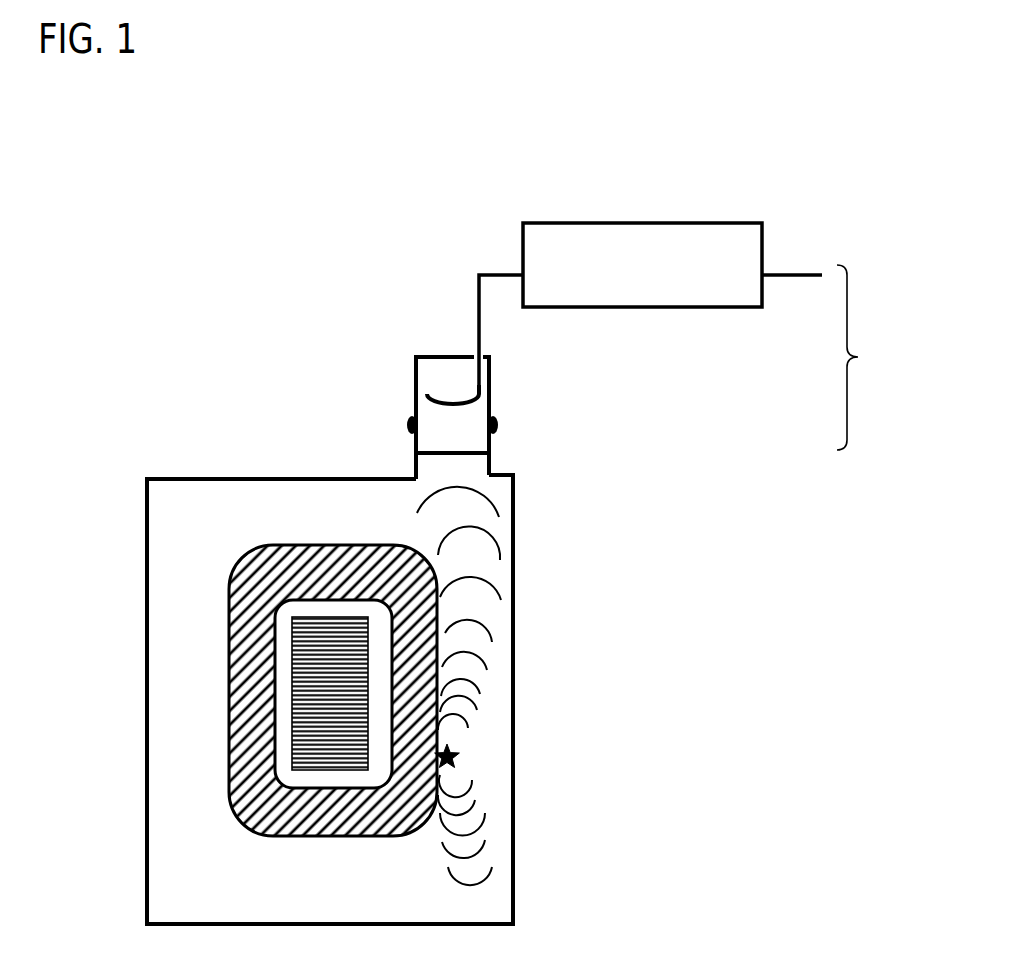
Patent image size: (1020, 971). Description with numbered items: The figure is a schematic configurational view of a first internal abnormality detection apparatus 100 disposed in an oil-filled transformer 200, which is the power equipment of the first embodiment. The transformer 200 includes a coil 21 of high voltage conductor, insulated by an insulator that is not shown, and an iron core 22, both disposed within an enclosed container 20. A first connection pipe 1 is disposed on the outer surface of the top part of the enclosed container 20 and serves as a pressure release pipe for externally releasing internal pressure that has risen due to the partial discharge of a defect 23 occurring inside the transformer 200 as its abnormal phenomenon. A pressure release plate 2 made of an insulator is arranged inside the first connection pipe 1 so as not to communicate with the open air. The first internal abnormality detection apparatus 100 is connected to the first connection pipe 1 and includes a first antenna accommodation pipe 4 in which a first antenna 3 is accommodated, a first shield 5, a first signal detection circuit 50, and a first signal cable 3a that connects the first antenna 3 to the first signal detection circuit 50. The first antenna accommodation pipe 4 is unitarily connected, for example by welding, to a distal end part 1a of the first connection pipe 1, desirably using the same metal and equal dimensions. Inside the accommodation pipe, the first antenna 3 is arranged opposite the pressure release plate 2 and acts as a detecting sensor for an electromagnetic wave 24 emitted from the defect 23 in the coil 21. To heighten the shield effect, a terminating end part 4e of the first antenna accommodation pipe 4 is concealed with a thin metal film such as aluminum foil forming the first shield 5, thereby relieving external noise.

The first connection pipe 1 is at (492, 465).
The distal end part 1a is at (497, 427).
The pressure release plate 2 is at (450, 451).
The first antenna 3 is at (425, 395).
The first signal cable 3a is at (480, 303).
The first antenna accommodation pipe 4 is at (489, 390).
The terminating end part 4e is at (413, 357).
The first shield 5 is at (452, 357).
The enclosed container 20 is at (515, 537).
The coil 21 is at (228, 598).
The iron core 22 is at (320, 708).
The defect 23 is at (457, 757).
The electromagnetic wave 24 is at (483, 628).
The first signal detection circuit 50 is at (690, 222).
The first internal abnormality detection apparatus 100 is at (872, 371).
The oil-filled transformer 200 is at (215, 397).